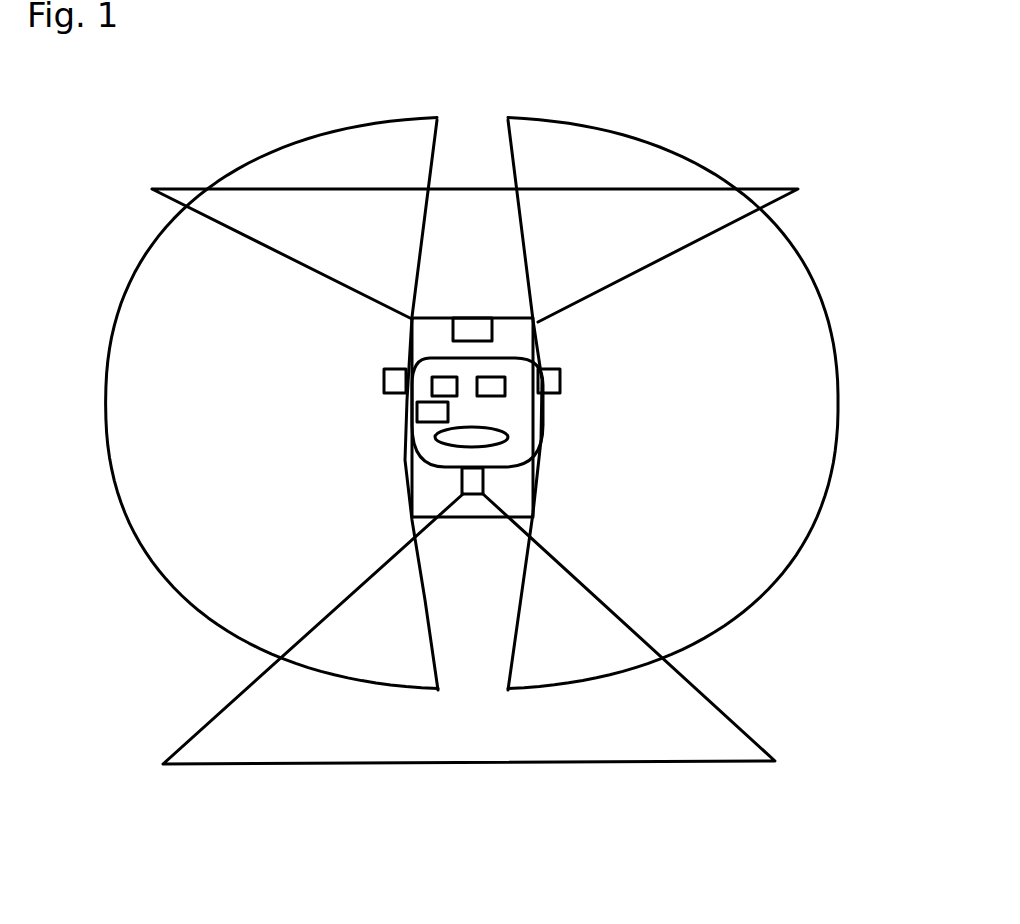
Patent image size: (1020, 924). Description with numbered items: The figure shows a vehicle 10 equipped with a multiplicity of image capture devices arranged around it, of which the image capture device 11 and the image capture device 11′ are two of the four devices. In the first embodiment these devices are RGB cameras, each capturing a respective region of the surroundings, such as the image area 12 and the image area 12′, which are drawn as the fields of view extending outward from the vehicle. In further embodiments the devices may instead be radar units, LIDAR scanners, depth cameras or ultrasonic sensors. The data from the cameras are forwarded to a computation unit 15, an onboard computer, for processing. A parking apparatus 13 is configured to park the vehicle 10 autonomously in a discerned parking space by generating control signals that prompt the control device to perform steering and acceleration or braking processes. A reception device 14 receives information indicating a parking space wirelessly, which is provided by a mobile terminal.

The vehicle 10 is at (415, 306).
The image capture device 11 is at (470, 326).
The image capture device 11′ is at (493, 385).
The image area 12 is at (580, 723).
The image area 12′ is at (230, 430).
The parking apparatus 13 is at (442, 385).
The reception device 14 is at (552, 378).
The computation unit 15 is at (430, 412).